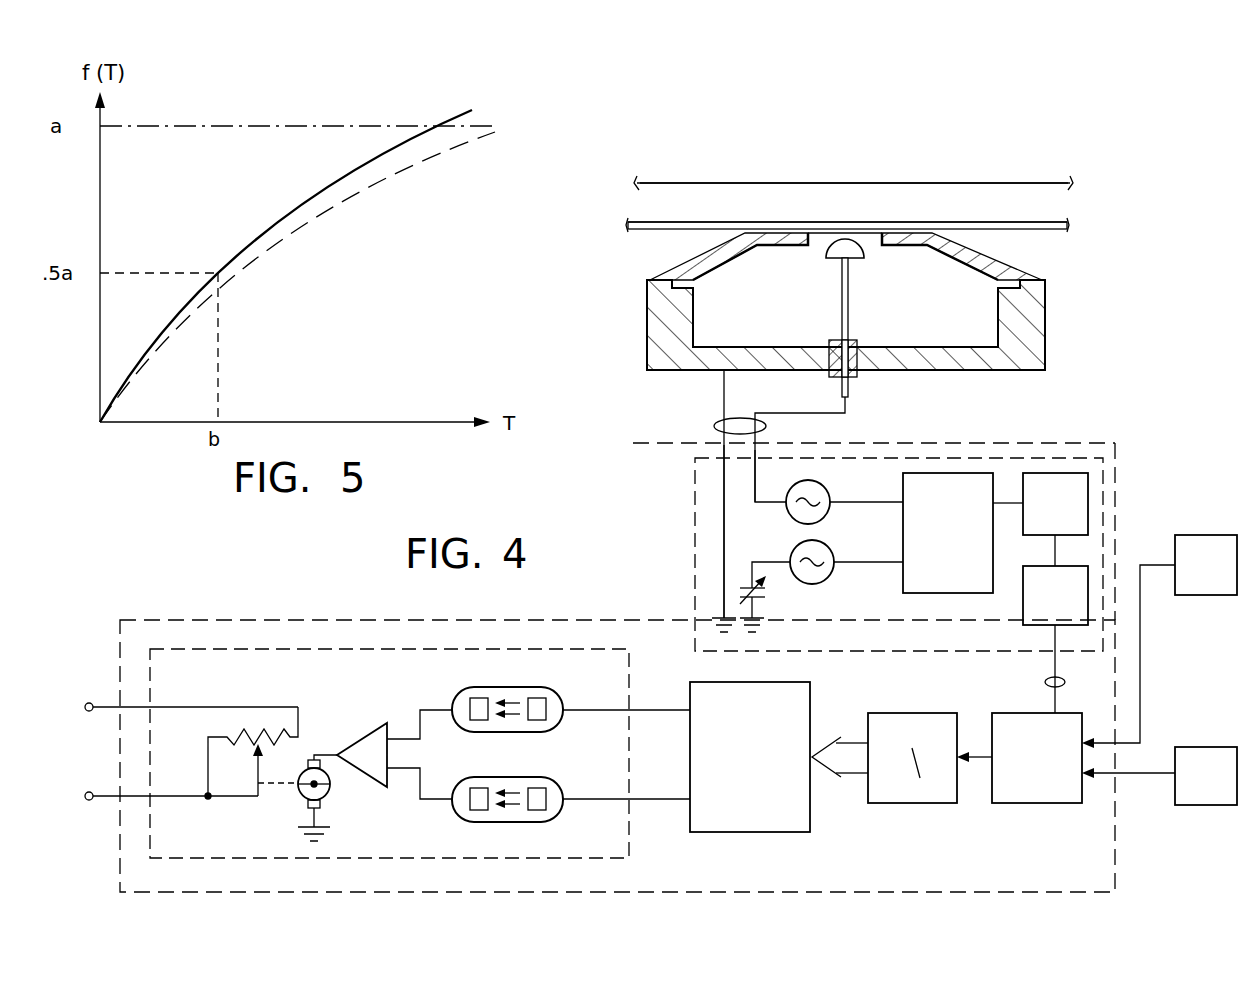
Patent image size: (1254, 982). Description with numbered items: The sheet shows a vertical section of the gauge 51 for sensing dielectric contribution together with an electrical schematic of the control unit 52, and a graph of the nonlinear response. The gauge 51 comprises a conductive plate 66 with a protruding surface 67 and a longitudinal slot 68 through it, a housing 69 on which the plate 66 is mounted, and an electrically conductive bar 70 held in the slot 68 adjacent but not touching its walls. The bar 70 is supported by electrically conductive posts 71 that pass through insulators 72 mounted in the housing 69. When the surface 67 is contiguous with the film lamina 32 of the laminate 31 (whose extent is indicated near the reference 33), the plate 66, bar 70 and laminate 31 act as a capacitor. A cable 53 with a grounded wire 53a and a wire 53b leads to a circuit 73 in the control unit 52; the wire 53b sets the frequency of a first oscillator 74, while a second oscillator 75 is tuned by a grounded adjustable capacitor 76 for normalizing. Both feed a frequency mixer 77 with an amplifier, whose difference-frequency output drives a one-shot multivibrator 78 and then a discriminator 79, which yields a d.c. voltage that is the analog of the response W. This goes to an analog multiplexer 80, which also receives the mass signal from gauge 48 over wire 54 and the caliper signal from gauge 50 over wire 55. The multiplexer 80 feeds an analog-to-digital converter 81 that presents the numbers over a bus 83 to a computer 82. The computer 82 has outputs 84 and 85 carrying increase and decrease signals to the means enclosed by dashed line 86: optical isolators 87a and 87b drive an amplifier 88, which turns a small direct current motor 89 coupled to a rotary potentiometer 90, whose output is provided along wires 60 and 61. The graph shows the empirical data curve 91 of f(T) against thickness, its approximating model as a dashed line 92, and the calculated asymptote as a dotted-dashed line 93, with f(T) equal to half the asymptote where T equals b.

In FIG. 4, the laminate 31 is at (868, 177).
In FIG. 4, the film lamina 32 is at (648, 230).
In FIG. 4, the flexible plate 33 is at (637, 183).
In FIG. 4, the gauge 48 is at (1195, 535).
In FIG. 4, the gauge 50 is at (1200, 805).
In FIG. 4, the gauge 51 is at (950, 368).
In FIG. 4, the control unit 52 is at (337, 620).
In FIG. 4, the cable 53 is at (715, 425).
In FIG. 4, the wire 53a is at (724, 489).
In FIG. 4, the wire 53b is at (757, 478).
In FIG. 4, the wire 54 is at (1140, 625).
In FIG. 4, the wire 55 is at (1143, 770).
In FIG. 4, the wire 60 is at (90, 703).
In FIG. 4, the wire 61 is at (90, 800).
In FIG. 4, the conductive plate 66 is at (998, 258).
In FIG. 4, the protruding surface 67 is at (930, 228).
In FIG. 4, the longitudinal slot 68 is at (880, 240).
In FIG. 4, the housing 69 is at (693, 318).
In FIG. 4, the electrically conductive bar 70 is at (830, 253).
In FIG. 4, the electrically conductive posts 71 is at (850, 300).
In FIG. 4, the insulators 72 is at (857, 340).
In FIG. 4, the circuit 73 is at (695, 530).
In FIG. 4, the first oscillator 74 is at (825, 494).
In FIG. 4, the second oscillator 75 is at (830, 552).
In FIG. 4, the adjustable capacitor 76 is at (758, 600).
In FIG. 4, the frequency mixer 77 is at (917, 593).
In FIG. 4, the one-shot multivibrator 78 is at (1023, 515).
In FIG. 4, the discriminator 79 is at (1023, 598).
In FIG. 4, the analog multiplexer 80 is at (1022, 803).
In FIG. 4, the analog-to-digital converter 81 is at (905, 803).
In FIG. 4, the computer 82 is at (770, 832).
In FIG. 4, the bus 83 is at (850, 774).
In FIG. 4, the output 84 is at (645, 710).
In FIG. 4, the output 85 is at (648, 801).
In FIG. 4, the dashed line 86 is at (629, 650).
In FIG. 4, the optical isolator 87a is at (540, 688).
In FIG. 4, the optical isolator 87b is at (540, 820).
In FIG. 4, the amplifier 88 is at (385, 724).
In FIG. 4, the direct current motor 89 is at (330, 792).
In FIG. 4, the rotary potentiometer 90 is at (288, 730).
In FIG. 5, the graph 91 is at (452, 115).
In FIG. 5, the dashed line 92 is at (345, 192).
In FIG. 5, the dotted-dashed line 93 is at (212, 125).
In FIG. 4, the response W is at (1046, 683).